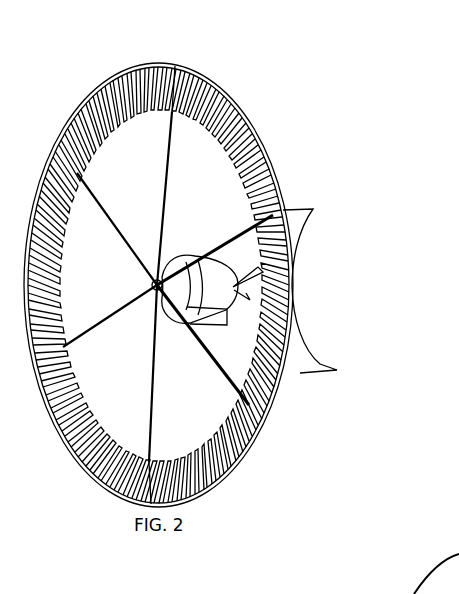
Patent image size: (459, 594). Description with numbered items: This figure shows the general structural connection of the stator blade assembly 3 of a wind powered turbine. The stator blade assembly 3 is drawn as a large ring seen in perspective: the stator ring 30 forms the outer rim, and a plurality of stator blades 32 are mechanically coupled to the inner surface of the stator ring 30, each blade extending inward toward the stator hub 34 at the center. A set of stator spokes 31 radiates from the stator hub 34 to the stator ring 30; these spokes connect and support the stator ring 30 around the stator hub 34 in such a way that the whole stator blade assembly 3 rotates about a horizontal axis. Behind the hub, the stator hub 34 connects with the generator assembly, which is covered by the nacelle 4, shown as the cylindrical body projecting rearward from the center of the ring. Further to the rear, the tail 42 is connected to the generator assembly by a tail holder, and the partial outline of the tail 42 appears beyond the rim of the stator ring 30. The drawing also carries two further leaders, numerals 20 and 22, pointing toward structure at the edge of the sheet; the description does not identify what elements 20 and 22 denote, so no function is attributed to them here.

The stator blade assembly 3 is at (226, 100).
The nacelle 4 is at (179, 256).
The housing 20 is at (458, 38).
The duct 22 is at (458, 196).
The stator ring 30 is at (153, 65).
The stator spokes 31 is at (109, 214).
The stator blades 32 is at (158, 90).
The stator hub 34 is at (152, 283).
The tail 42 is at (297, 212).